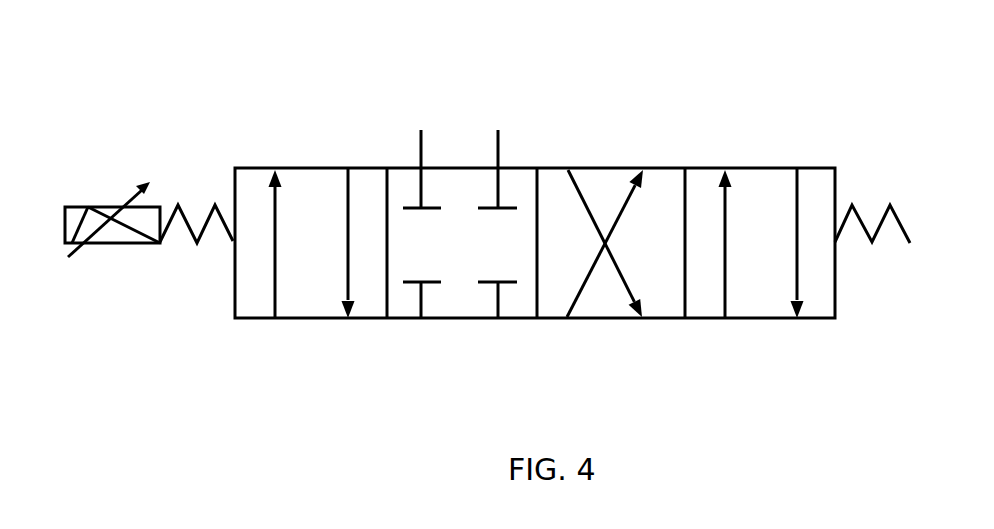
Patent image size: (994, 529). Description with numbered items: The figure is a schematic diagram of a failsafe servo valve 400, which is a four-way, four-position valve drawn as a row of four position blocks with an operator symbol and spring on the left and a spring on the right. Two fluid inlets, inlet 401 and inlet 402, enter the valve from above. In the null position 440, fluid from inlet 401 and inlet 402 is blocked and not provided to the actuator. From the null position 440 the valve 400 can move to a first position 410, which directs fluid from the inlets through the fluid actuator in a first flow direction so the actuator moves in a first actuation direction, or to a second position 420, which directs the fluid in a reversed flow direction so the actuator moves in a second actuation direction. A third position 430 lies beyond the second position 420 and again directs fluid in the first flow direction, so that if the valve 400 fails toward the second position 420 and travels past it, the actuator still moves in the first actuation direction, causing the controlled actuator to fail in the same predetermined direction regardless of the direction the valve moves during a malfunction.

The failsafe servo valve 400 is at (124, 61).
The inlet 401 is at (420, 148).
The inlet 402 is at (497, 140).
The first position 410 is at (385, 353).
The second position 420 is at (687, 353).
The third position 430 is at (837, 353).
The null position 440 is at (537, 353).